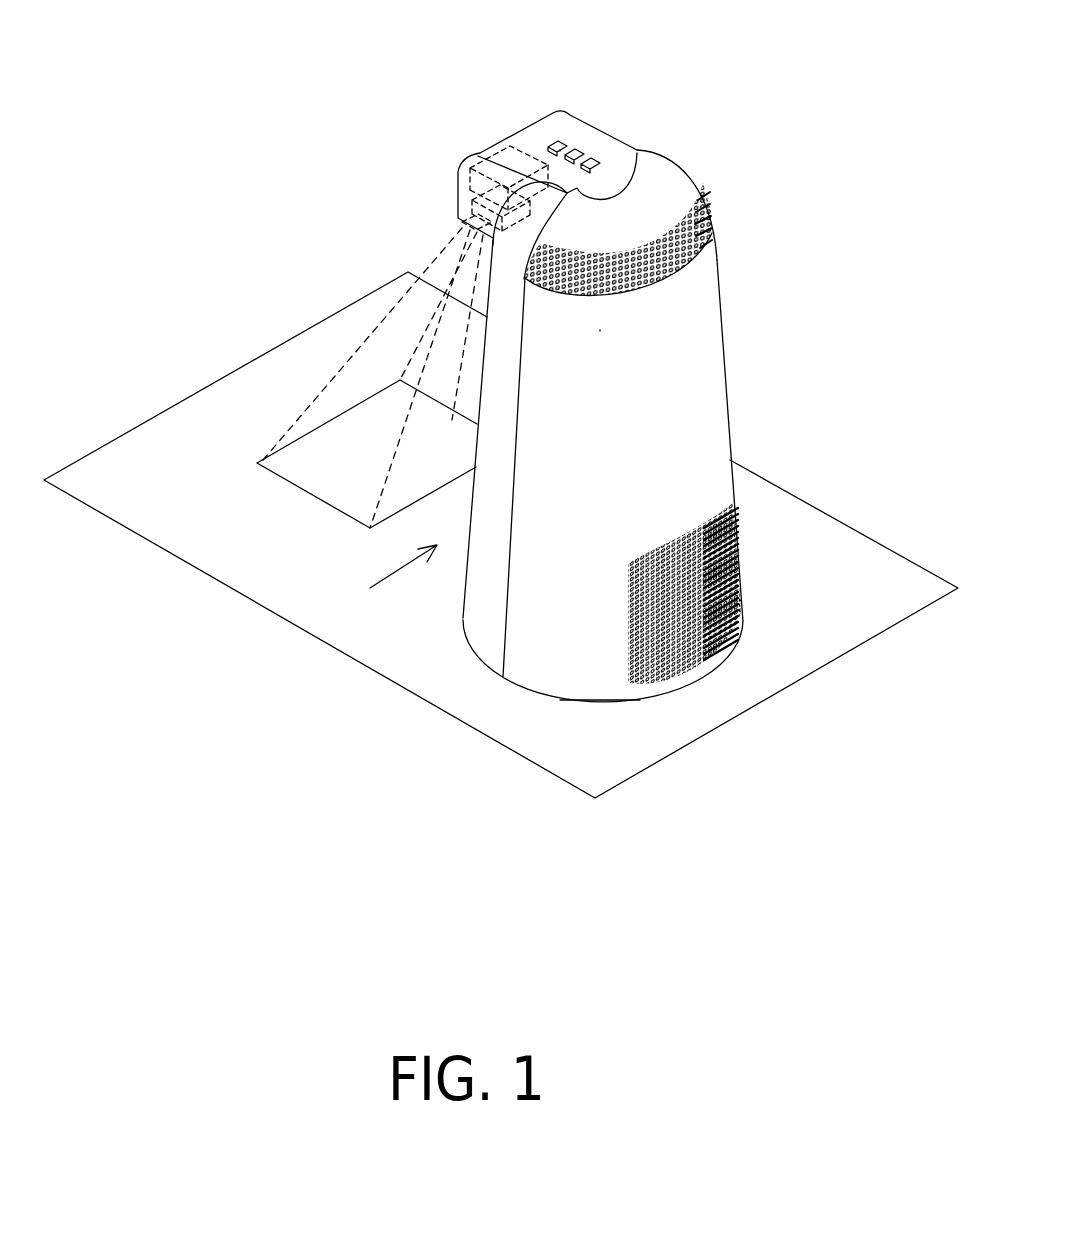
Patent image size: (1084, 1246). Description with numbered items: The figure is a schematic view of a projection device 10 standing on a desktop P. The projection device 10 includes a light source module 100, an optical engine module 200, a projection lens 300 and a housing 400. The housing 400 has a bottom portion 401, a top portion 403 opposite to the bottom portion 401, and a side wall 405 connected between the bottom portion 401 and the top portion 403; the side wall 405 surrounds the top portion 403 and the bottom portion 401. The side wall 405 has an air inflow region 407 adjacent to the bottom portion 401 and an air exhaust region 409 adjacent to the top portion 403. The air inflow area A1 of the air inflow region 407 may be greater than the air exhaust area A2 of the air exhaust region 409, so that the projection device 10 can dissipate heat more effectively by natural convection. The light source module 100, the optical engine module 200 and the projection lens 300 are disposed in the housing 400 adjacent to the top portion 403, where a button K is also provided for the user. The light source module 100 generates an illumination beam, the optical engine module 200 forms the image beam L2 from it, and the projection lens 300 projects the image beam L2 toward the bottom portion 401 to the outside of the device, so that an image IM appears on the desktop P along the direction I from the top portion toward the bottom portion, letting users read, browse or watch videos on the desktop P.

The projection device 10 is at (717, 133).
The light source module 100 is at (470, 218).
The optical engine module 200 is at (468, 150).
The projection lens 300 is at (458, 193).
The housing 400 is at (722, 325).
The bottom portion 401 is at (570, 703).
The top portion 403 is at (613, 150).
The side wall 405 is at (695, 383).
The air inflow region 407 is at (743, 582).
The air exhaust region 409 is at (728, 235).
The air inflow area A1 is at (713, 660).
The air exhaust area A2 is at (695, 272).
The button K is at (578, 150).
The desktop P is at (882, 567).
The image IM is at (332, 490).
The image beam L2 is at (345, 355).
The direction indicator I is at (403, 581).